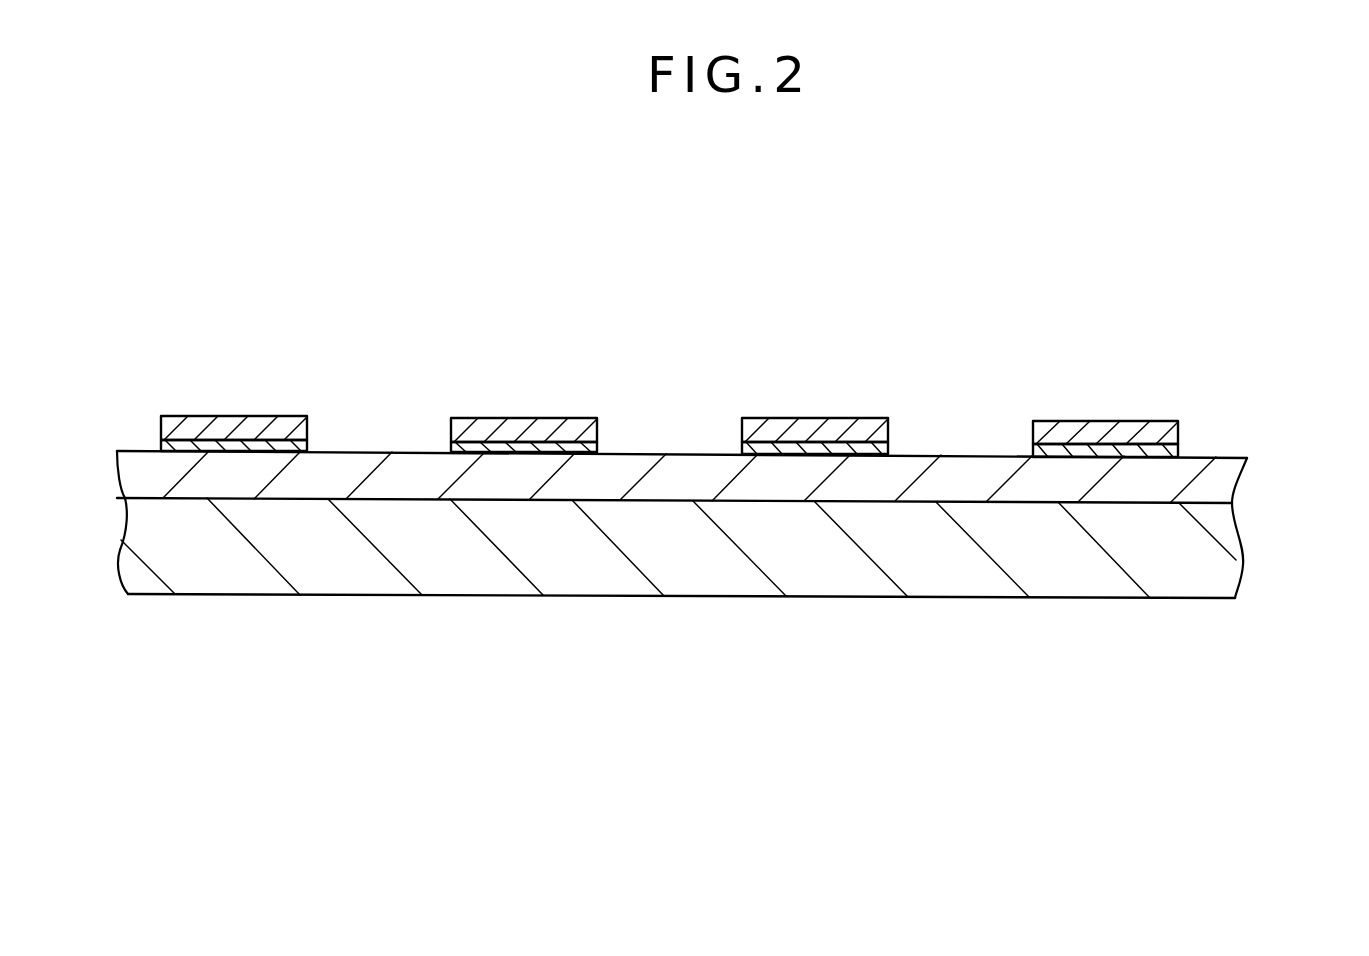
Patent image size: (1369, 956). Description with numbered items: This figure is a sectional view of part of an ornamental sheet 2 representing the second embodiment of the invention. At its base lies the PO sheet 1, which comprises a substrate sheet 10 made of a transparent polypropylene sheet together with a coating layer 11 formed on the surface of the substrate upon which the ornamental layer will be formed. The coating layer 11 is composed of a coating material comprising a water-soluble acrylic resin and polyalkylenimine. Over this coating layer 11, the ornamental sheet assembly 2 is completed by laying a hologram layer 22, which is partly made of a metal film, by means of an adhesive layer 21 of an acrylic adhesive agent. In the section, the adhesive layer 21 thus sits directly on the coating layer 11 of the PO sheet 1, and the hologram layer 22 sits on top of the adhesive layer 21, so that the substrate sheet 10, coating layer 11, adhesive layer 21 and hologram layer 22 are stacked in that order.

The PO sheet 1 is at (738, 524).
The substrate sheet 10 is at (718, 548).
The coating layer 11 is at (1230, 478).
The ornamental sheet 2 is at (669, 345).
The adhesive layer 21 is at (307, 450).
The hologram layer 22 is at (537, 427).